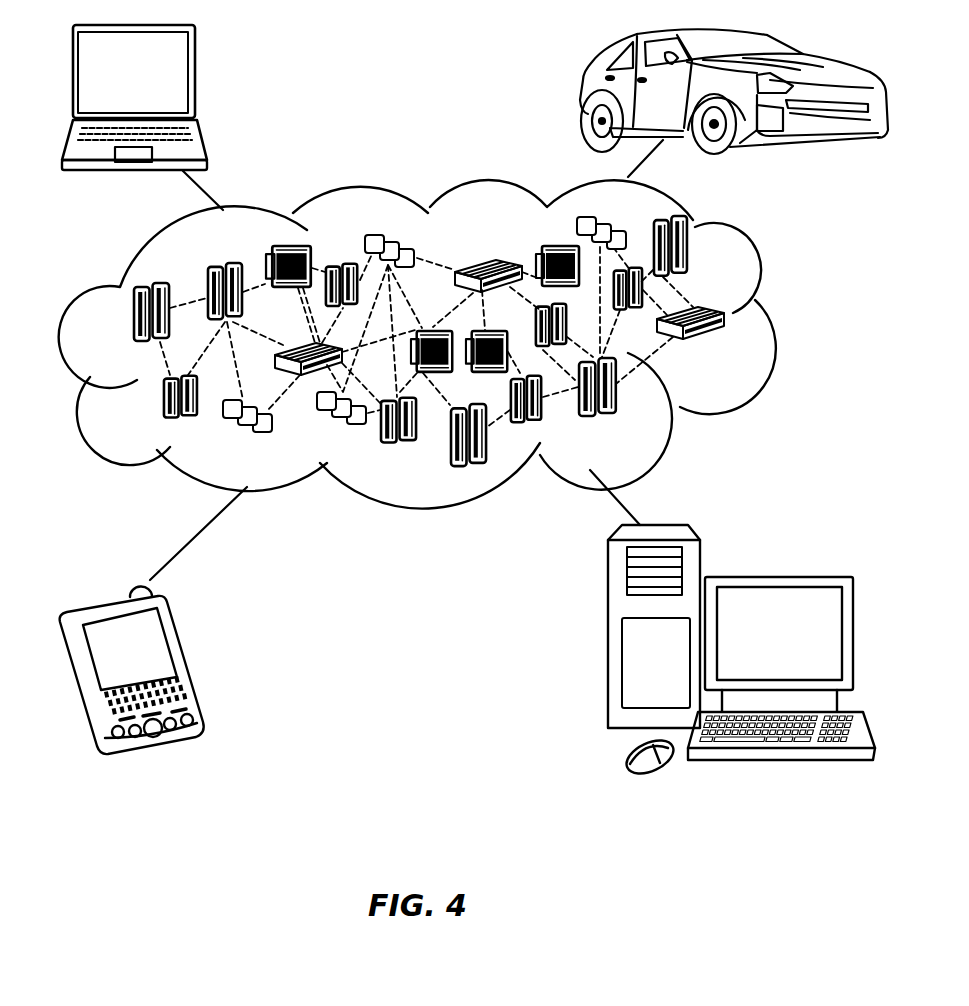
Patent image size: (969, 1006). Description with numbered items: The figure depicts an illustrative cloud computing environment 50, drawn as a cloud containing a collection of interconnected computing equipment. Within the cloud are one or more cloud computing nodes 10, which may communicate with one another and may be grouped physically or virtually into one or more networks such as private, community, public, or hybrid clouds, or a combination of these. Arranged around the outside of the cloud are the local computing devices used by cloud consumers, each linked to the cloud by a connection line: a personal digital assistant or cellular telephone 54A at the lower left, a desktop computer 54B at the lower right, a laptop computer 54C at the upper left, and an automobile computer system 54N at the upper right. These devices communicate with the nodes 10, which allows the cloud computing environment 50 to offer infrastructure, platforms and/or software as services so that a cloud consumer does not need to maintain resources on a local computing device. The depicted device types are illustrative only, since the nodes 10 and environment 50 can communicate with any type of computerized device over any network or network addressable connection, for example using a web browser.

The cloud computing node 10 is at (733, 351).
The cloud computing environment 50 is at (778, 322).
The personal digital assistant or cellular telephone 54A is at (187, 660).
The desktop computer 54B is at (779, 577).
The laptop computer 54C is at (197, 77).
The automobile computer system 54N is at (585, 92).